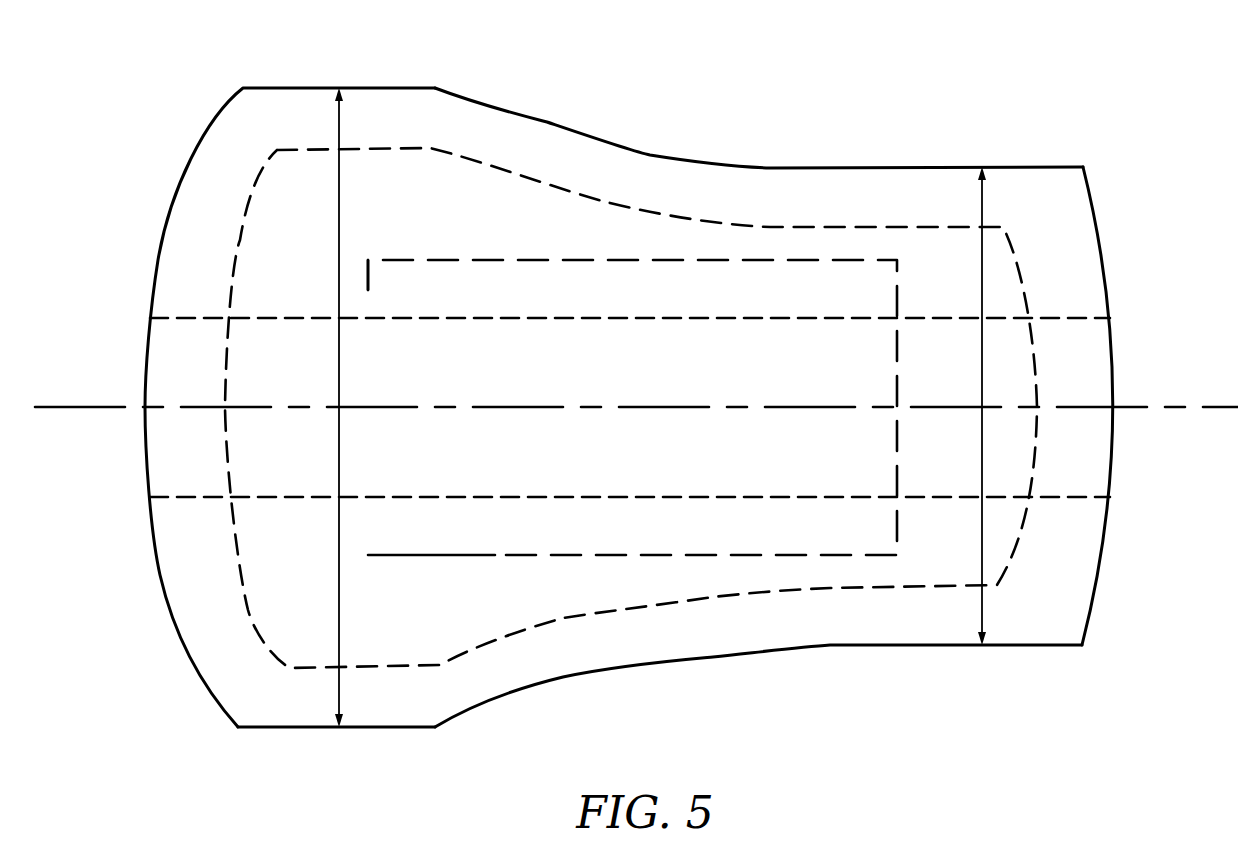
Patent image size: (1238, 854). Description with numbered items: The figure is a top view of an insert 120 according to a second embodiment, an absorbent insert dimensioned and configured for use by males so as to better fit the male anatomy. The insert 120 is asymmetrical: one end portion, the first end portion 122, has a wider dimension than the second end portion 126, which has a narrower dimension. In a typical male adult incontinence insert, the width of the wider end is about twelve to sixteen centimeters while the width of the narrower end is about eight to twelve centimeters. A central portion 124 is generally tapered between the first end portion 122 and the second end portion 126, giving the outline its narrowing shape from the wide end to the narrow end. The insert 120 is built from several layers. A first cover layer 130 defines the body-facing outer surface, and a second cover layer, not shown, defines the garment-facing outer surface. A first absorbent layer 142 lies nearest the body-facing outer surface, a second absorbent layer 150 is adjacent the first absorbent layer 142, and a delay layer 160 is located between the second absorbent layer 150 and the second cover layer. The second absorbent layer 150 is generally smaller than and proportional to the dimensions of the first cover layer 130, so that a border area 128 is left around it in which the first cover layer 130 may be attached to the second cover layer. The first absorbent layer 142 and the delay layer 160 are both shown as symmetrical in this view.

The insert 120 is at (188, 62).
The first end portion 122 is at (278, 125).
The central portion 124 is at (700, 185).
The second end portion 126 is at (1047, 207).
The border area 128 is at (1053, 578).
The first cover layer 130 is at (358, 730).
The first absorbent layer 142 is at (450, 556).
The second absorbent layer 150 is at (268, 683).
The delay layer 160 is at (302, 302).